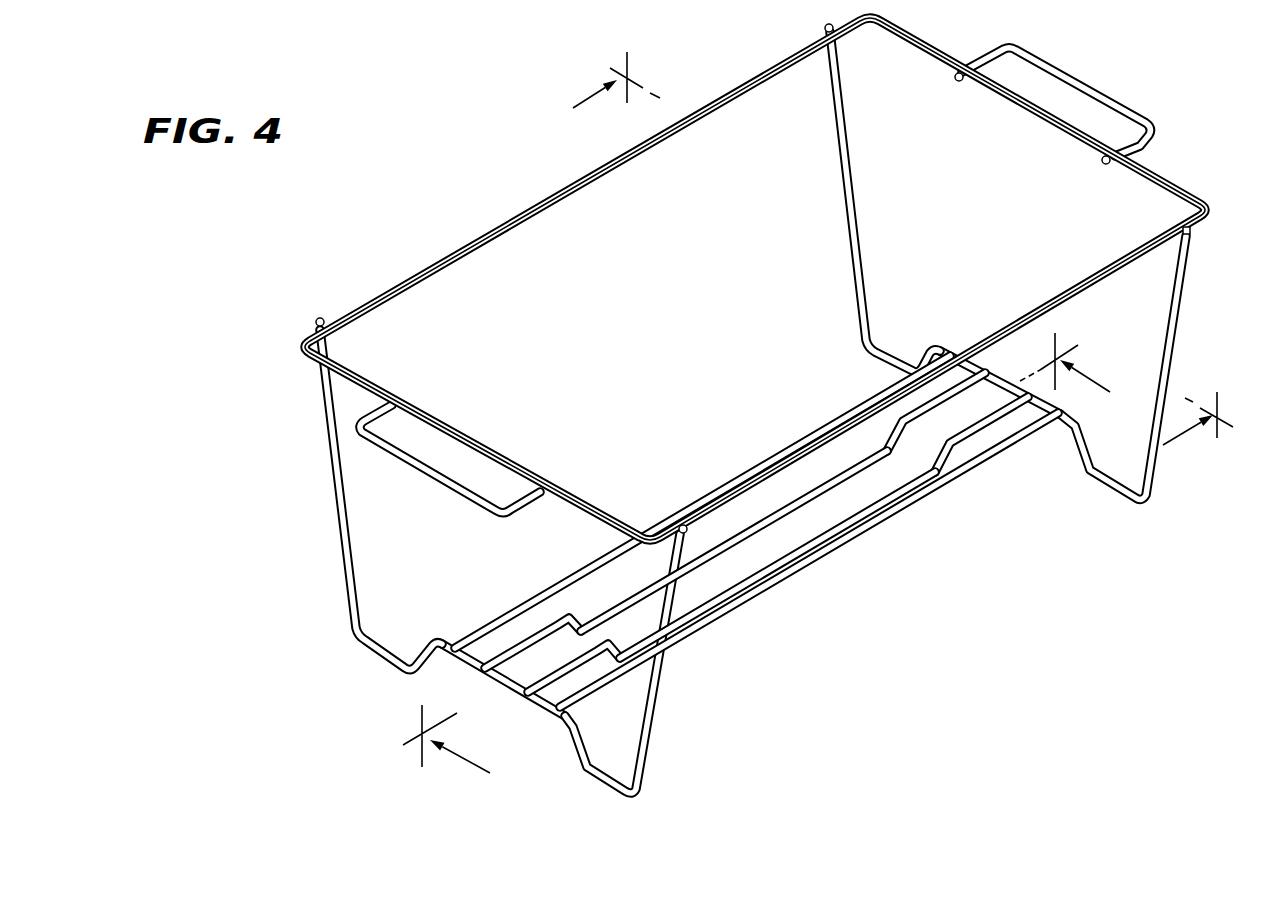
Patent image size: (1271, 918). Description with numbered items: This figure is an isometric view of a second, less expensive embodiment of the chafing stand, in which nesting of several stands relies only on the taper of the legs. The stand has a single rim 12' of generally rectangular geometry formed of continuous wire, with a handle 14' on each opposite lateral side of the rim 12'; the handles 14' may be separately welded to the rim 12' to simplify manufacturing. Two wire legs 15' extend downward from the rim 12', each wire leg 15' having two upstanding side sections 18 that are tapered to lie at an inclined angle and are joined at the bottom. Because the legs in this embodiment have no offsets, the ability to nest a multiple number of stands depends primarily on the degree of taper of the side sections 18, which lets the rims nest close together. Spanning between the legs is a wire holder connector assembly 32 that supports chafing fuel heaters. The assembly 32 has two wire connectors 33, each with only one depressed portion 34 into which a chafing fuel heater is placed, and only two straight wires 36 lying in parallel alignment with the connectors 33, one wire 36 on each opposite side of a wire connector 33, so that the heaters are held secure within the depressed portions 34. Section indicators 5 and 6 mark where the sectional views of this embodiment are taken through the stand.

The section line 5- 5 is at (890, 264).
The section line 6- 6 is at (762, 563).
The rim 12' is at (755, 279).
The handle 14' is at (777, 292).
The wire leg 15' is at (755, 406).
The upstanding side section 18 is at (852, 158).
The wire holder connector assembly 32 is at (874, 583).
The wire connector 33 is at (528, 637).
The depressed portion 34 is at (823, 530).
The straight wire 36 is at (597, 560).